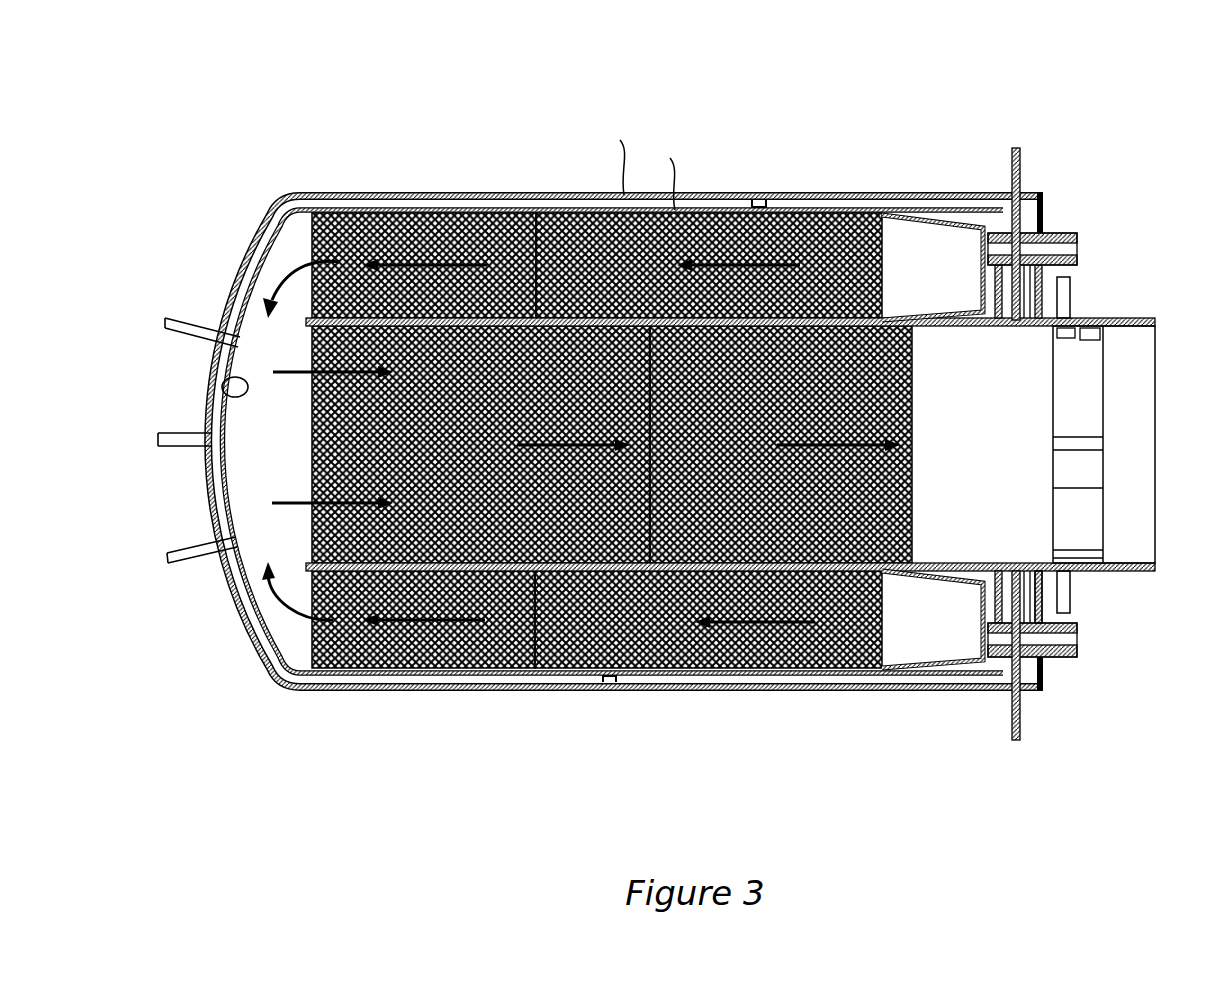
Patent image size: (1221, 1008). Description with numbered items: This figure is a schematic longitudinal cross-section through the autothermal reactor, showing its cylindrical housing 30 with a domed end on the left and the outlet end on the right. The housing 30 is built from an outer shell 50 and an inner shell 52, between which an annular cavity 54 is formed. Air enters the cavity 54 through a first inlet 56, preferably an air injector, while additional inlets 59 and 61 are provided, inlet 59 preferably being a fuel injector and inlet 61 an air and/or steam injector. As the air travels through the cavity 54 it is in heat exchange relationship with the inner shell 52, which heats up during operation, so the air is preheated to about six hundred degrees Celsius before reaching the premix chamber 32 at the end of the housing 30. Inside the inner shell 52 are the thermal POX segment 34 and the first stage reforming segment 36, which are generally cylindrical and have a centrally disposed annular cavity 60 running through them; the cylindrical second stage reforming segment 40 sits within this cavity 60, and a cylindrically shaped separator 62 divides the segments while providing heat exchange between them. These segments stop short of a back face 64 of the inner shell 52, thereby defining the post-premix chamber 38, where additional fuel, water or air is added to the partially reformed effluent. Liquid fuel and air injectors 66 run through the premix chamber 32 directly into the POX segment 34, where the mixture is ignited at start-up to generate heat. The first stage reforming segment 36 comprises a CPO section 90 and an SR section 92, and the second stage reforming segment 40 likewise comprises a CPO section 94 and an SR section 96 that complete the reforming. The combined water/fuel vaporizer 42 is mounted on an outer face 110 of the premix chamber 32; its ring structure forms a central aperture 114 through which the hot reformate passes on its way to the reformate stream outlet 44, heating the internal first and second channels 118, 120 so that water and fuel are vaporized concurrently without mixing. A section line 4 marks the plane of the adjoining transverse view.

The cylindrical housing 30 is at (345, 192).
The premix chamber 32 is at (1045, 200).
The thermal partial oxidization (POX) segment 34 is at (928, 247).
The first stage reforming segment 36 is at (483, 208).
The post-premix chamber 38 is at (283, 252).
The second stage reforming segment 40 is at (308, 539).
The combined water/fuel vaporizer 42 is at (1107, 320).
The reformate stream outlet 44 is at (1125, 500).
The outer shell 50 is at (495, 743).
The inner shell 52 is at (555, 730).
The annular cavity 54 is at (755, 200).
The first inlet 56 is at (160, 438).
The inlet 59 is at (165, 322).
The centrally disposed annular cavity 60 is at (305, 313).
The inlet 61 is at (167, 560).
The cylindrically shaped separator 62 is at (308, 320).
The back face 64 is at (227, 388).
The liquid fuel and air injectors 66 is at (1072, 235).
The CPO section 90 is at (565, 215).
The SR section 92 is at (437, 215).
The CPO section 94 is at (388, 552).
The SR section 96 is at (703, 548).
The outer face 110 is at (1043, 613).
The central aperture 114 is at (1087, 520).
The first channel 118 is at (1063, 338).
The second channel 120 is at (1093, 340).
The section line 4- 4 is at (1015, 148).